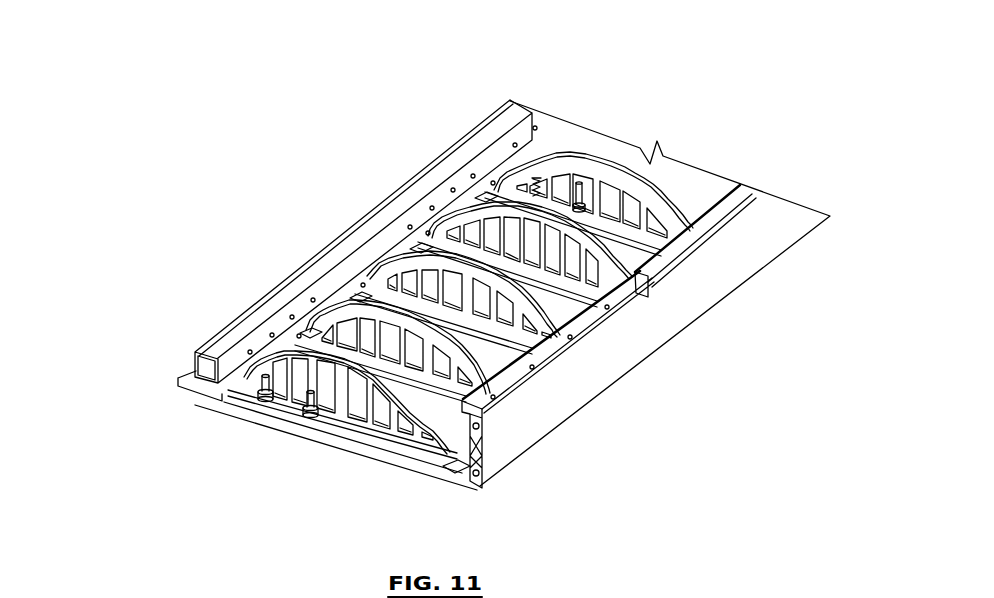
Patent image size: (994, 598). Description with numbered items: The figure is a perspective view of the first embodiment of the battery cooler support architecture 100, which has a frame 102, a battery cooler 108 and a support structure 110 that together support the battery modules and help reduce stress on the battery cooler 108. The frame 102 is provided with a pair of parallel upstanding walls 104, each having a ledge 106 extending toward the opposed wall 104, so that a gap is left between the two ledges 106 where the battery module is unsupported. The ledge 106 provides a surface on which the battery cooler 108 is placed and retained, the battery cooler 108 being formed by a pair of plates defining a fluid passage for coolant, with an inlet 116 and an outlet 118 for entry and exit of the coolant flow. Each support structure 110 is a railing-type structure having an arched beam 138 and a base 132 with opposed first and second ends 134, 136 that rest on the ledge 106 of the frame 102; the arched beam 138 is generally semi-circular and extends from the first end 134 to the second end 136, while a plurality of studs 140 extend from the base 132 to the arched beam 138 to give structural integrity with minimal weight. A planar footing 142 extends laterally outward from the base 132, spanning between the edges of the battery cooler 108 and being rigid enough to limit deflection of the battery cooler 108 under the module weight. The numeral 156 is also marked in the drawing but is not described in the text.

The battery cooler support architecture 100 is at (220, 97).
The frame 102 is at (598, 377).
The upstanding wall 104 is at (277, 327).
The ledge 106 is at (233, 388).
The battery cooler 108 is at (562, 302).
The support structure 110 is at (358, 314).
The inlet 116 is at (264, 387).
The outlet 118 is at (308, 403).
The base 132 is at (407, 438).
The first end 134 is at (450, 438).
The second end 136 is at (499, 184).
The arched beam 138 is at (600, 167).
The stud 140 is at (600, 200).
The footing 142 is at (633, 237).
The component 156 is at (836, 591).